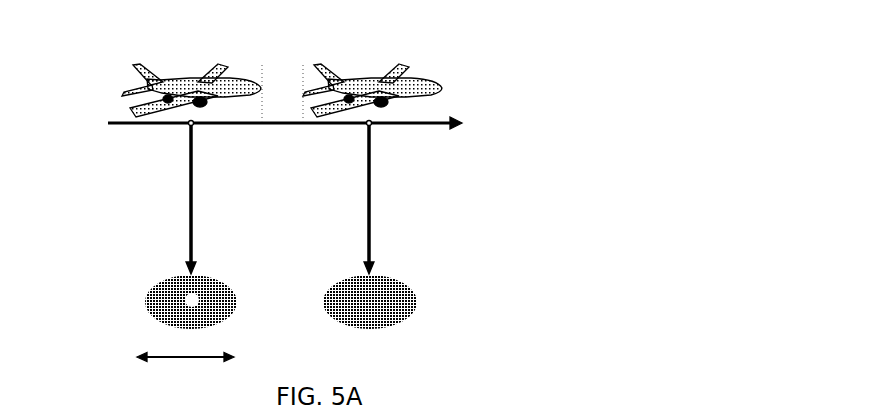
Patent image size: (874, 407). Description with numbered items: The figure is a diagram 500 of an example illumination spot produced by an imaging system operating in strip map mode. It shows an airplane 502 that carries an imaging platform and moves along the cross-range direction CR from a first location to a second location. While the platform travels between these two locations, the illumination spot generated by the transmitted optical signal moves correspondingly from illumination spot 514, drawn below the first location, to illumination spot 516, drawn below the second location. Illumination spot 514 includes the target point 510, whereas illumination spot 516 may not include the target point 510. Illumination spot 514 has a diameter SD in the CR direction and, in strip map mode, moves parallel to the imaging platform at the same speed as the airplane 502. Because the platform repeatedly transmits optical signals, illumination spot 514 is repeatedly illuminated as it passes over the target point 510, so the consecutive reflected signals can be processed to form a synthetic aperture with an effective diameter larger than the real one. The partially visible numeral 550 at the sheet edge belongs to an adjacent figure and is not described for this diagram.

The diagram 500 is at (498, 80).
The airplane 502 is at (182, 78).
The target point 510 is at (185, 301).
The illumination spot 514 is at (153, 292).
The illumination spot 516 is at (333, 292).
The adjacent figure label (cut off) 550 is at (553, 400).